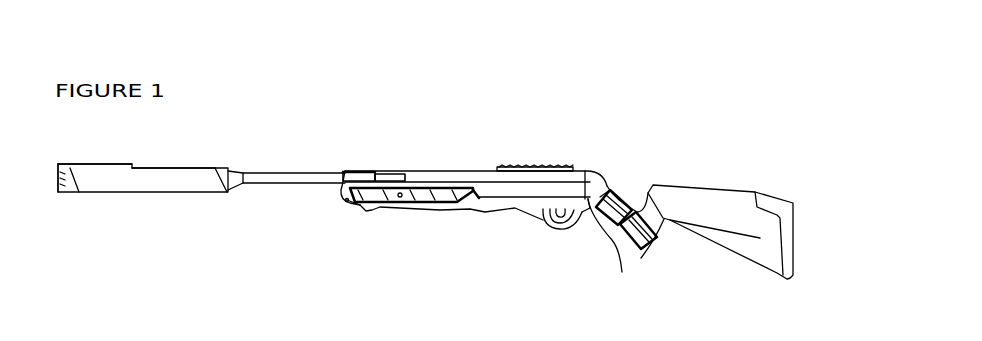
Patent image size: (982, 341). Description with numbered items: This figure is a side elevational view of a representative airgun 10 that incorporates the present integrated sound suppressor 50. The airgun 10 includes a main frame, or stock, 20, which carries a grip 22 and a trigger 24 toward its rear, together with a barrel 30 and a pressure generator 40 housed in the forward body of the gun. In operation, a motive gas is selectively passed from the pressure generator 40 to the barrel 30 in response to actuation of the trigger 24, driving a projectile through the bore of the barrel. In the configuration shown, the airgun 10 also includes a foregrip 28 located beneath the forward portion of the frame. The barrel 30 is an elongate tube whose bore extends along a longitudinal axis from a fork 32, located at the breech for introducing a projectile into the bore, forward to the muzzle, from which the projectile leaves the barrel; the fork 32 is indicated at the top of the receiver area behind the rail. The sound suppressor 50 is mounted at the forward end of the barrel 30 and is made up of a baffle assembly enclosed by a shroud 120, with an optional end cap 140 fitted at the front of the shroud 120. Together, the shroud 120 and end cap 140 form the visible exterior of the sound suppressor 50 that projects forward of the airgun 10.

The airgun 10 is at (528, 107).
The main frame 20 is at (508, 195).
The grip 22 is at (622, 272).
The trigger 24 is at (565, 230).
The foregrip 28 is at (408, 208).
The barrel 30 is at (346, 172).
The fork 32 is at (405, 172).
The pressure generator 40 is at (497, 176).
The sound suppressor 50 is at (148, 214).
The shroud 120 is at (155, 175).
The end cap 140 is at (67, 163).